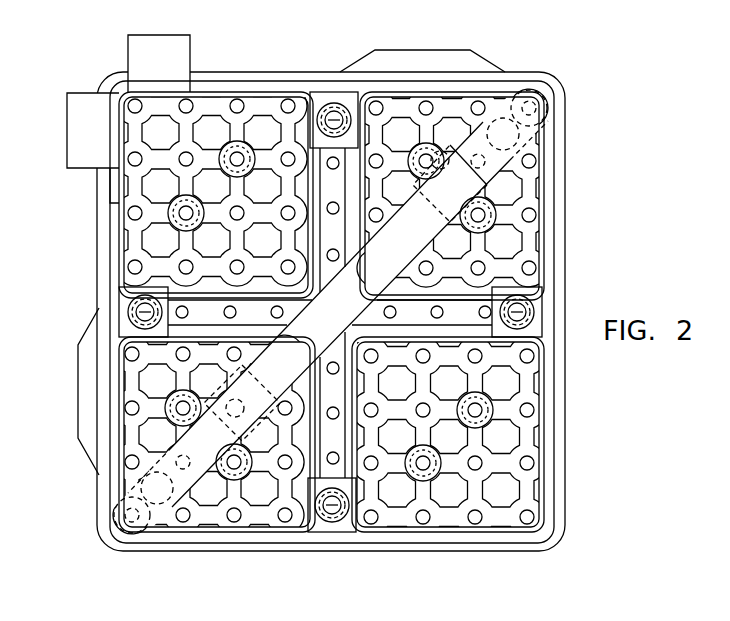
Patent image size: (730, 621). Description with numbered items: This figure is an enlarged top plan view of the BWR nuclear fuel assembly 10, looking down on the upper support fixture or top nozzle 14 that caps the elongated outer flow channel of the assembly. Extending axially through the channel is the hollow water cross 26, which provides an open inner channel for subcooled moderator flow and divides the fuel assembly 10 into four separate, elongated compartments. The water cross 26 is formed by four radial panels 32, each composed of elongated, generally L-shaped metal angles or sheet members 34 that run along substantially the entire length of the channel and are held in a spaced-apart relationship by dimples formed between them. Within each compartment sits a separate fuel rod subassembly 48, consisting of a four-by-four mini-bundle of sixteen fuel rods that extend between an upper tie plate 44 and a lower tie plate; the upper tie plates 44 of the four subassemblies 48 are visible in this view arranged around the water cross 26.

The nuclear fuel assembly 10 is at (583, 65).
The top nozzle 14 is at (568, 463).
The water cross 26 is at (211, 327).
The radial panel 32 is at (355, 165).
The sheet member 34 is at (300, 188).
The upper tie plate 44 is at (262, 92).
The fuel rod subassembly 48 is at (121, 184).